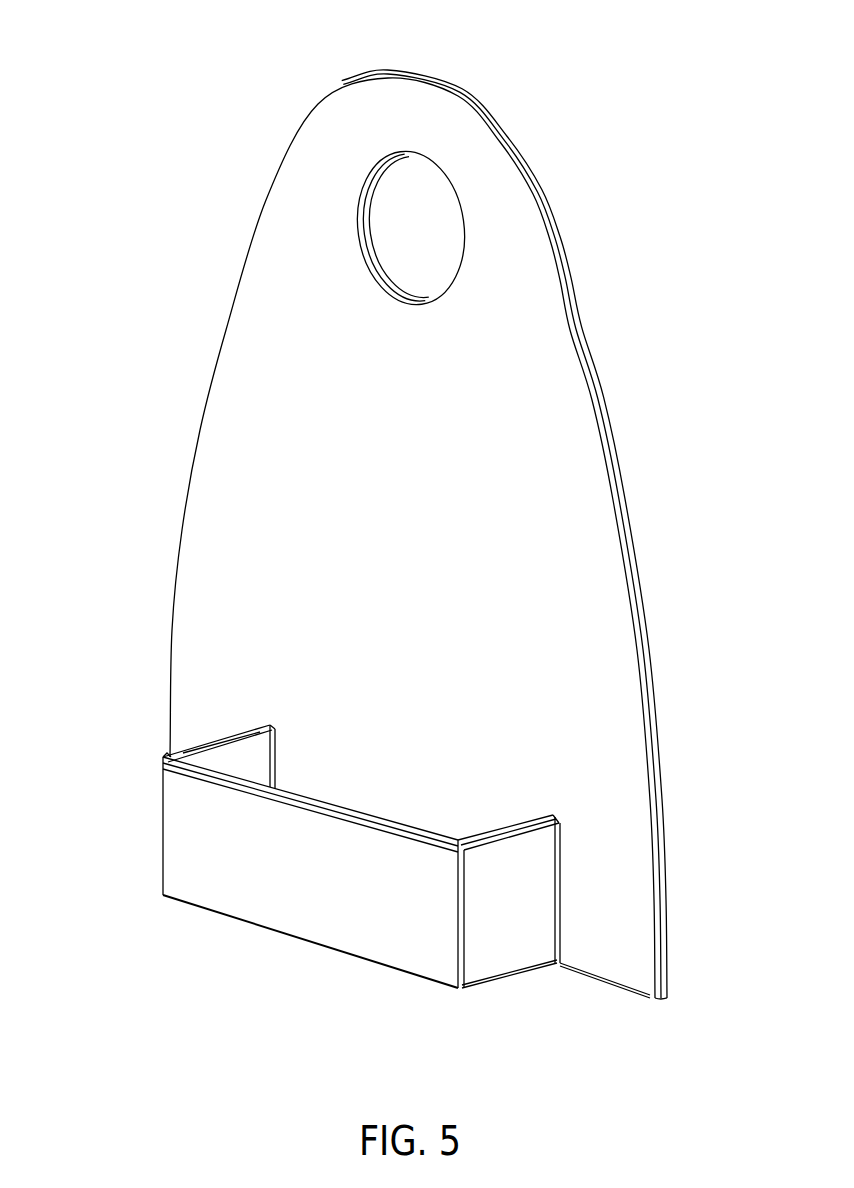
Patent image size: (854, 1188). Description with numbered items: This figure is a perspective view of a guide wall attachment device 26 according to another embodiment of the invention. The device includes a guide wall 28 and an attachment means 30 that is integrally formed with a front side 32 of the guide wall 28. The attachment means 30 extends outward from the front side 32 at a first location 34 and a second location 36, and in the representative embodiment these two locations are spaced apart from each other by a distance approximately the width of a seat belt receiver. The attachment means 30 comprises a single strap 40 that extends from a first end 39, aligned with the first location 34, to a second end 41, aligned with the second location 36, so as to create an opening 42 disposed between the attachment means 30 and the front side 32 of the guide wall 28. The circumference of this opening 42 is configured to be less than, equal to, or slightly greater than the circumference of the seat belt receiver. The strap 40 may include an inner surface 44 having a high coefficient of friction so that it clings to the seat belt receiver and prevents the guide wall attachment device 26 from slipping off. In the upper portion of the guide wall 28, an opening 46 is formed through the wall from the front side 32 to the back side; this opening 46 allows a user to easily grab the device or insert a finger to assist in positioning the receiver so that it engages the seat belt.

The guide wall attachment device 26 is at (638, 175).
The guide wall 28 is at (548, 382).
The front side 32 is at (394, 466).
The opening 46 is at (432, 243).
The second location 36 is at (587, 845).
The attachment means 30 is at (409, 947).
The strap 40 is at (213, 872).
The first location 34 is at (298, 762).
The opening 42 is at (448, 788).
The second end 41 is at (565, 927).
The first end 39 is at (238, 737).
The inner surface 44 is at (212, 757).